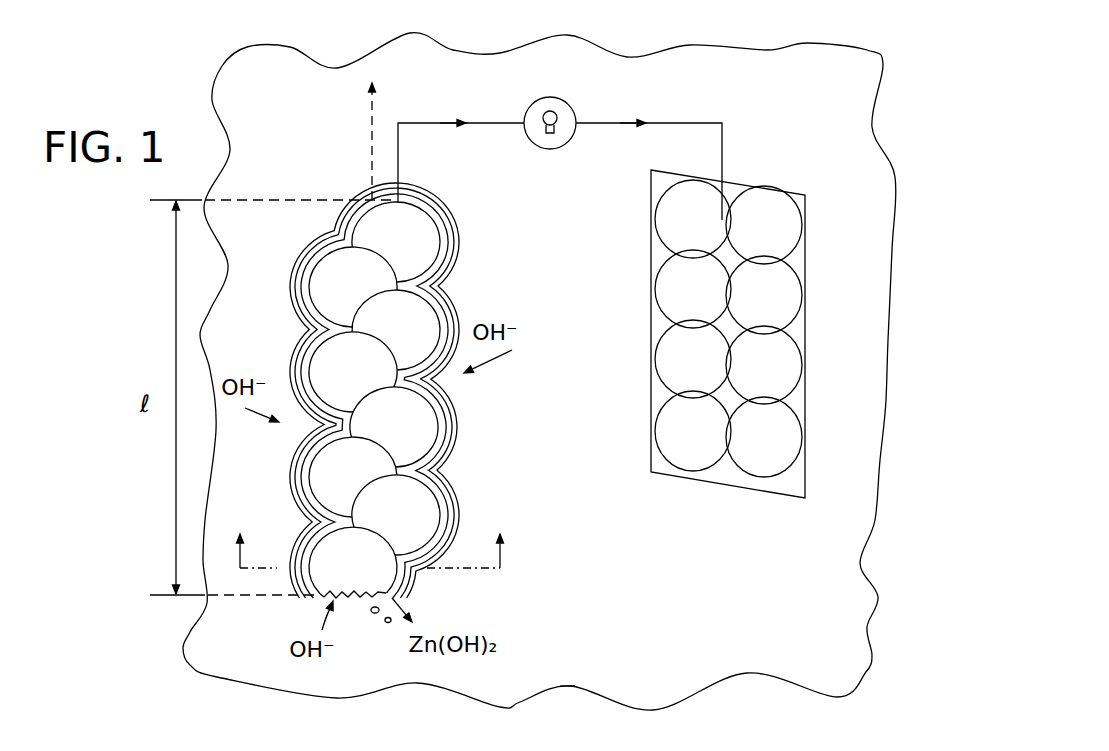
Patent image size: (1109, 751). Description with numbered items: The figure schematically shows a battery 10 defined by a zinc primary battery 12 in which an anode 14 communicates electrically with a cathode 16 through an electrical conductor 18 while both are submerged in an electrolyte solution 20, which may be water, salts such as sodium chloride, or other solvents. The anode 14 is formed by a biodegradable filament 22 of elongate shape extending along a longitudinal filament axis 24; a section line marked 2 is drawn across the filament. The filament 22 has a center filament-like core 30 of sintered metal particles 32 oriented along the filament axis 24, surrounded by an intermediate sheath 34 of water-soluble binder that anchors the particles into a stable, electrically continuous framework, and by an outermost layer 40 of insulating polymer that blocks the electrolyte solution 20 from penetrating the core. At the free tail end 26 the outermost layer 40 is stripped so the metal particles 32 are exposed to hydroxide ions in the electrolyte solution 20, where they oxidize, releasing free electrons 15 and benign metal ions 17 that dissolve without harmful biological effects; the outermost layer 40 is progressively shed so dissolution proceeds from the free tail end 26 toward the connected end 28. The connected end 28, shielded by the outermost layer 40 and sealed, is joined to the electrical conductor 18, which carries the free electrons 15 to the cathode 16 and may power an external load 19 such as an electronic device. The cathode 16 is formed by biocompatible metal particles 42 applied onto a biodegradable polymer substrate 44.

The section line 2- 2 is at (370, 536).
The battery 10 is at (907, 80).
The zinc primary battery 12 is at (558, 371).
The anode 14 is at (282, 193).
The free electrons 15 is at (461, 88).
The cathode 16 is at (767, 510).
The metal ions 17 is at (450, 662).
The electrical conductor 18 is at (597, 122).
The external load 19 is at (550, 114).
The electrolyte solution 20 is at (845, 628).
The biodegradable filament 22 is at (461, 220).
The longitudinal filament axis 24 is at (372, 123).
The free tail end 26 is at (322, 598).
The connected end 28 is at (418, 185).
The center filament-like core 30 is at (423, 501).
The metal particles 32 is at (328, 295).
The intermediate sheath 34 is at (434, 291).
The outermost layer 40 is at (294, 473).
The metal particles 42 is at (790, 240).
The polymer substrate 44 is at (806, 279).